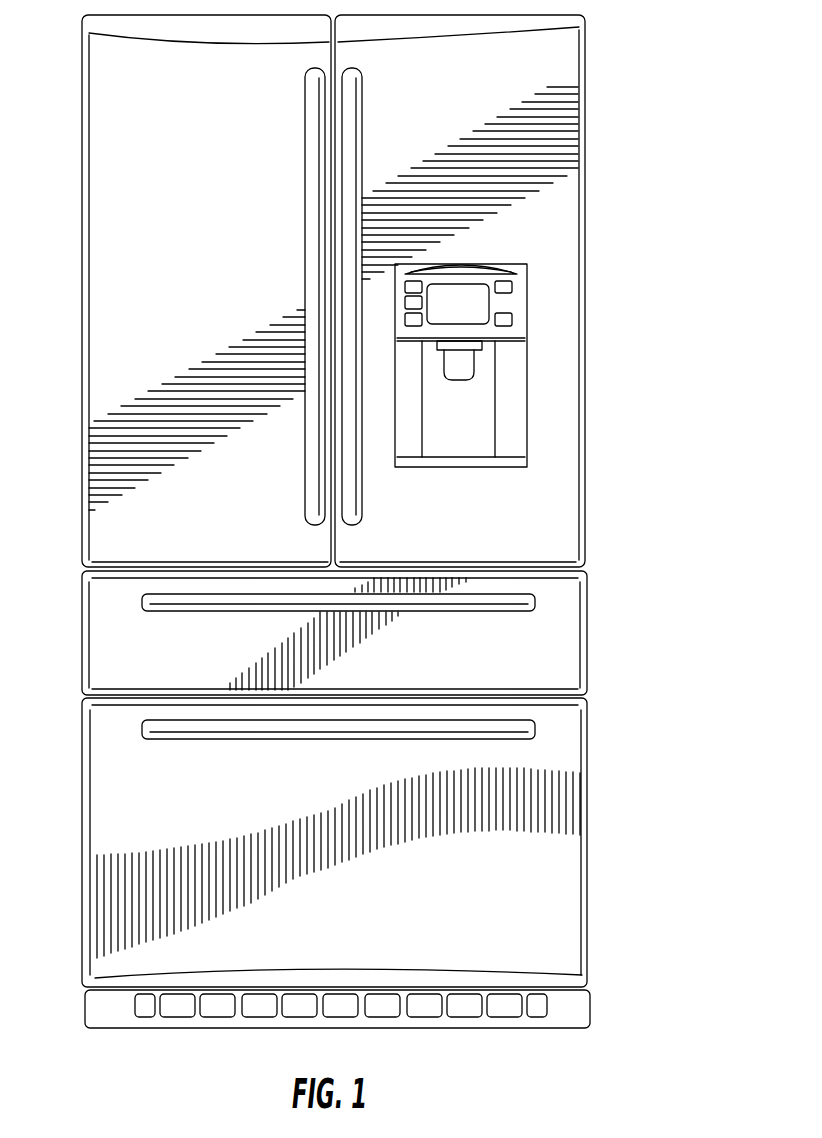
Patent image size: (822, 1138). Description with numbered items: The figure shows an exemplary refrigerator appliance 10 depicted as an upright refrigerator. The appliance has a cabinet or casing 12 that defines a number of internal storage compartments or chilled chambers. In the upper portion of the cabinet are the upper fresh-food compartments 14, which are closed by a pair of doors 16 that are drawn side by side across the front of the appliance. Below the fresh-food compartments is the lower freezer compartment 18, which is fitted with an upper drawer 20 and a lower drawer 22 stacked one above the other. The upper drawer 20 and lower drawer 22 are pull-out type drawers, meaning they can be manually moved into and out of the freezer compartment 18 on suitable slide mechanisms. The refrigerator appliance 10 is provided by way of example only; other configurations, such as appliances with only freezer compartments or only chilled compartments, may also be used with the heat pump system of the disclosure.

The refrigerator appliance 10 is at (362, 521).
The cabinet or casing 12 is at (585, 483).
The upper fresh-food compartments 14 is at (306, 291).
The doors 16 is at (242, 484).
The lower freezer compartment 18 is at (372, 779).
The upper drawer 20 is at (189, 664).
The lower drawer 22 is at (441, 916).